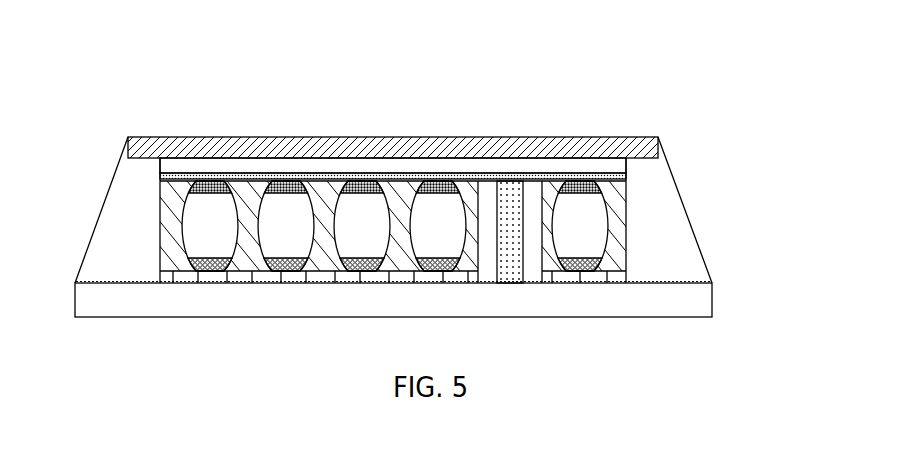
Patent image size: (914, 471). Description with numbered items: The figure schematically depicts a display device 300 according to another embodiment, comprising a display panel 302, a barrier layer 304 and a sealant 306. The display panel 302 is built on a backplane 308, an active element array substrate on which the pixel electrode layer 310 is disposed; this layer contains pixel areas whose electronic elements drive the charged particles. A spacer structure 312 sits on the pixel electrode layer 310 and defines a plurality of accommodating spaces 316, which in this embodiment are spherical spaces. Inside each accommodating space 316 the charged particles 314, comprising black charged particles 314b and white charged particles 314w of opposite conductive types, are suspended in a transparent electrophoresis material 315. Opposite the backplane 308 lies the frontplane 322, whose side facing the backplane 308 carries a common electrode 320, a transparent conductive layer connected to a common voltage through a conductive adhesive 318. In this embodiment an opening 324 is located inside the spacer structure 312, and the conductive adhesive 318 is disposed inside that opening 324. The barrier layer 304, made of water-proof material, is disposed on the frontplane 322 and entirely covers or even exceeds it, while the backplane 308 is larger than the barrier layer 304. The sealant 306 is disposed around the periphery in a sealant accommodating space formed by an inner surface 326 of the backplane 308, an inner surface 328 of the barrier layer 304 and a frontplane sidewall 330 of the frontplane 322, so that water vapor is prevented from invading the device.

The display device 300 is at (669, 78).
The display panel 302 is at (800, 360).
The barrier layer 304 is at (132, 147).
The sealant 306 is at (112, 245).
The backplane 308 is at (692, 298).
The pixel electrode layer 310 is at (623, 275).
The spacer structure 312 is at (618, 260).
The charged particles 314 is at (491, 222).
The black charged particles 314b is at (598, 192).
The white charged particles 314w is at (603, 243).
The electrophoresis material 315 is at (583, 211).
The accommodating space 316 is at (612, 225).
The conductive adhesive 318 is at (507, 270).
The common electrode 320 is at (617, 176).
The frontplane 322 is at (617, 162).
The opening 324 is at (491, 182).
The inner surface of the backplane 326 is at (97, 282).
The inner surface of the barrier layer 328 is at (137, 158).
The frontplane sidewall 330 is at (158, 177).